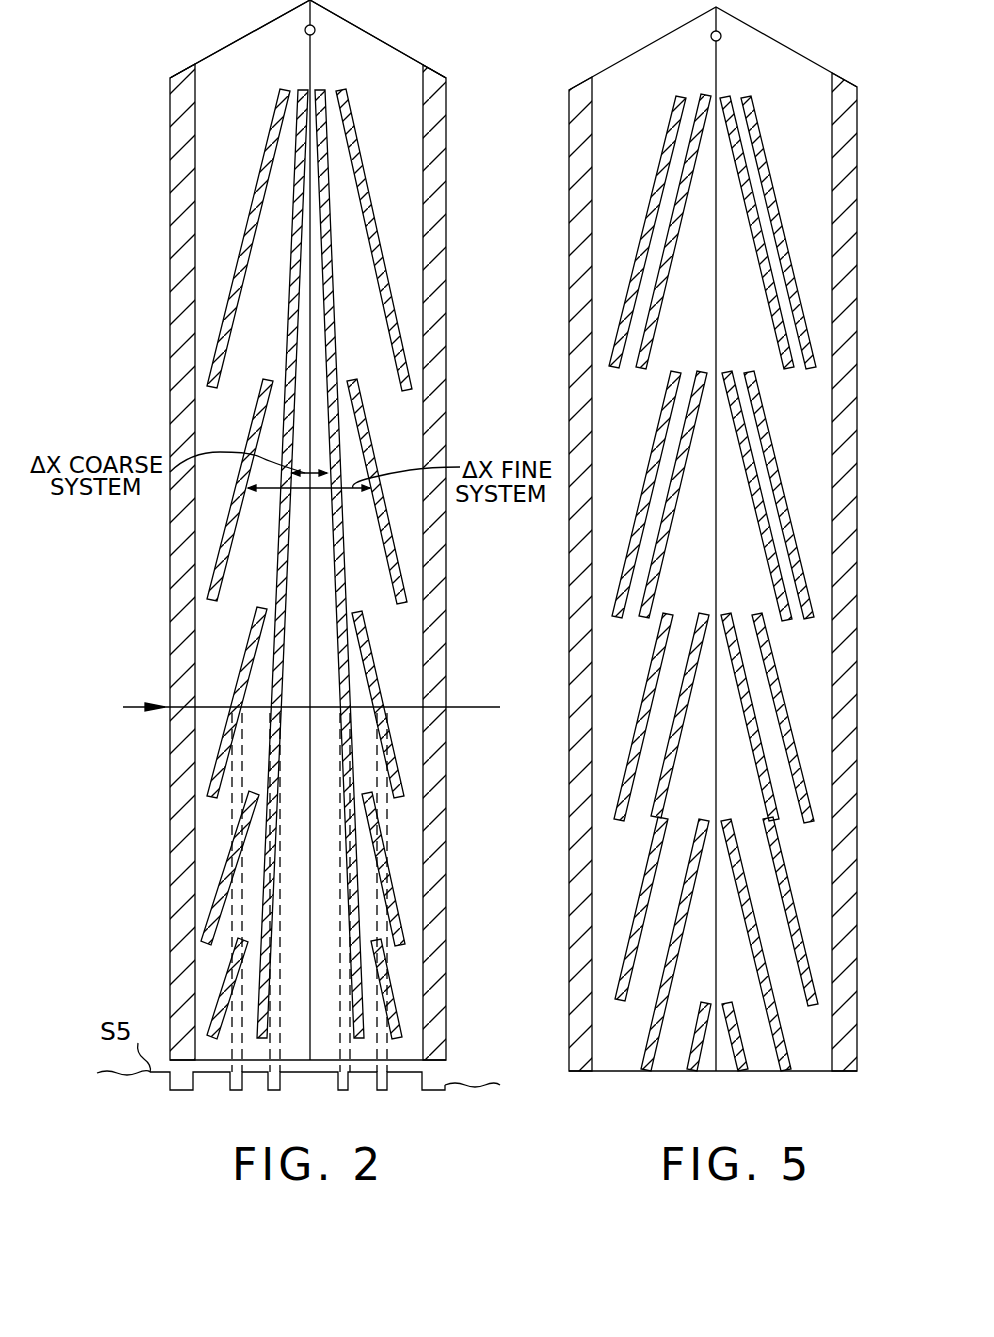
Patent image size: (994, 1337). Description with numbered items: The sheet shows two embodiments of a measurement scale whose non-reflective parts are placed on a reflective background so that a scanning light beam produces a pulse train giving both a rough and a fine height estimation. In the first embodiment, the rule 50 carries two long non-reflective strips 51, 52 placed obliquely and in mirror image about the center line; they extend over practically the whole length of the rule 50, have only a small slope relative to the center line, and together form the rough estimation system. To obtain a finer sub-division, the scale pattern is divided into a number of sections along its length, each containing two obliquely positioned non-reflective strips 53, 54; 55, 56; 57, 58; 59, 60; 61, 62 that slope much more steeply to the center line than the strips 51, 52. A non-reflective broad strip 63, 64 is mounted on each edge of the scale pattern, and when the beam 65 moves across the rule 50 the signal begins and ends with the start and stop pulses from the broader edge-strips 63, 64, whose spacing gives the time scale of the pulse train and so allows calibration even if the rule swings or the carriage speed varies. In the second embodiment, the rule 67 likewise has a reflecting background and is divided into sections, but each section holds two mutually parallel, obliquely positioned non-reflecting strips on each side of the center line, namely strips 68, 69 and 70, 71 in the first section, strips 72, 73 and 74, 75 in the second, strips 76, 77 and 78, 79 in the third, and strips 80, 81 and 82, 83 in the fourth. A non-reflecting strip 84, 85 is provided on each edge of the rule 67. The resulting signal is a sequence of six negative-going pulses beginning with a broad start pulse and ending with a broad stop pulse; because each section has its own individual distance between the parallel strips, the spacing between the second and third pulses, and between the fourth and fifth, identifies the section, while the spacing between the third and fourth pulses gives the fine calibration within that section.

In FIG. 2, the rule 50 is at (407, 135).
In FIG. 2, the non-reflective strip 51 is at (327, 290).
In FIG. 2, the non-reflective strip 52 is at (296, 272).
In FIG. 2, the obliquely positioned non-reflective strip 53 is at (356, 182).
In FIG. 2, the obliquely positioned non-reflective strip 54 is at (268, 152).
In FIG. 2, the obliquely positioned non-reflective strip 55 is at (386, 548).
In FIG. 2, the obliquely positioned non-reflective strip 56 is at (228, 544).
In FIG. 2, the obliquely positioned non-reflective strip 57 is at (372, 660).
In FIG. 2, the obliquely positioned non-reflective strip 58 is at (258, 632).
In FIG. 2, the obliquely positioned non-reflective strip 59 is at (390, 848).
In FIG. 2, the obliquely positioned non-reflective strip 60 is at (233, 847).
In FIG. 2, the obliquely positioned non-reflective strip 61 is at (393, 987).
In FIG. 2, the obliquely positioned non-reflective strip 62 is at (227, 987).
In FIG. 2, the non-reflective broad strip 63 is at (442, 752).
In FIG. 2, the non-reflective broad strip 64 is at (182, 752).
In FIG. 2, the beam 65 is at (132, 706).
In FIG. 5, the rule 67 is at (793, 78).
In FIG. 5, the non-reflecting strip 68 is at (758, 147).
In FIG. 5, the non-reflecting strip 69 is at (763, 272).
In FIG. 5, the non-reflecting strip 70 is at (670, 145).
In FIG. 5, the non-reflecting strip 71 is at (660, 290).
In FIG. 5, the non-reflecting strip 72 is at (758, 408).
In FIG. 5, the non-reflecting strip 73 is at (760, 463).
In FIG. 5, the non-reflecting strip 74 is at (668, 403).
In FIG. 5, the non-reflecting strip 75 is at (678, 458).
In FIG. 5, the non-reflecting strip 76 is at (778, 663).
In FIG. 5, the non-reflecting strip 77 is at (753, 710).
In FIG. 5, the non-reflecting strip 78 is at (658, 655).
In FIG. 5, the non-reflecting strip 79 is at (683, 690).
In FIG. 5, the non-reflecting strip 80 is at (777, 855).
In FIG. 5, the non-reflecting strip 81 is at (742, 893).
In FIG. 5, the non-reflecting strip 82 is at (655, 850).
In FIG. 5, the non-reflecting strip 83 is at (687, 893).
In FIG. 5, the non-reflecting strip 84 is at (848, 850).
In FIG. 5, the non-reflecting strip 85 is at (580, 850).